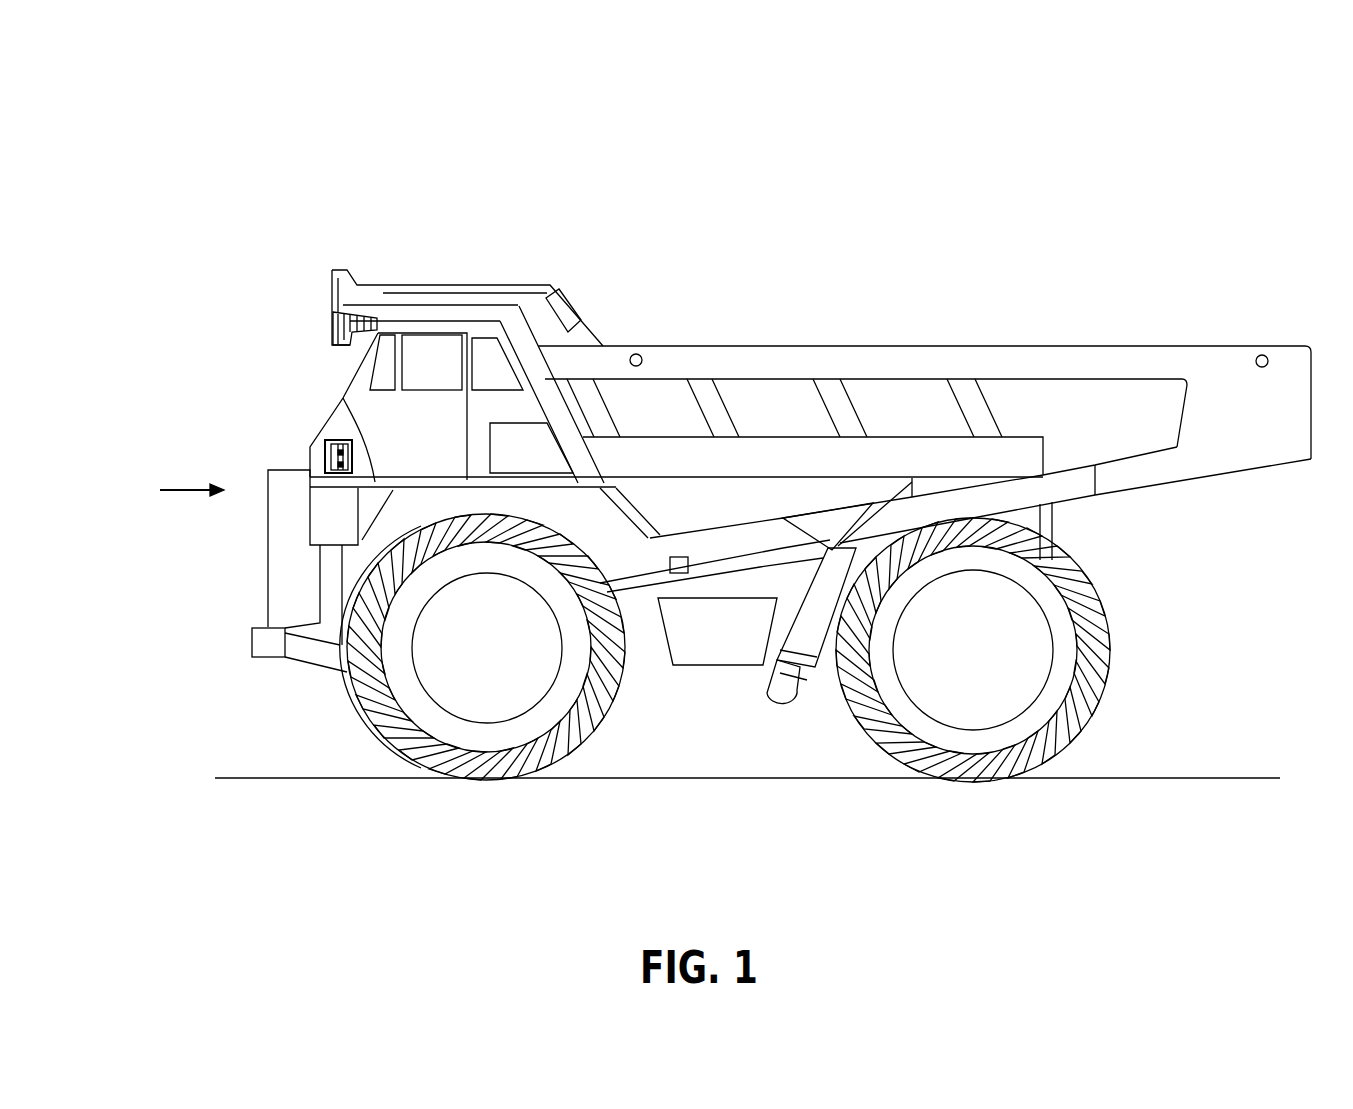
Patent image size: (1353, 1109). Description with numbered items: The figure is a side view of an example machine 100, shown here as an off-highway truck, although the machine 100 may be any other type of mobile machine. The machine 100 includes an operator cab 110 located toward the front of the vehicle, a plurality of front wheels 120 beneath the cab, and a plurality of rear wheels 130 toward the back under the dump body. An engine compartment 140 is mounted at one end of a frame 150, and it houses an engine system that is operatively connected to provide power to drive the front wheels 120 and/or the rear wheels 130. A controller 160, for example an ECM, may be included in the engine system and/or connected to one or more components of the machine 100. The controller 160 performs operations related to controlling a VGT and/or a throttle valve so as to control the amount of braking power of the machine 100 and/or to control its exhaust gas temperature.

The machine 100 is at (143, 143).
The operator cab 110 is at (398, 434).
The front wheels 120 is at (410, 703).
The rear wheels 130 is at (1098, 667).
The engine compartment 140 is at (168, 489).
The frame 150 is at (655, 622).
The controller 160 is at (325, 463).